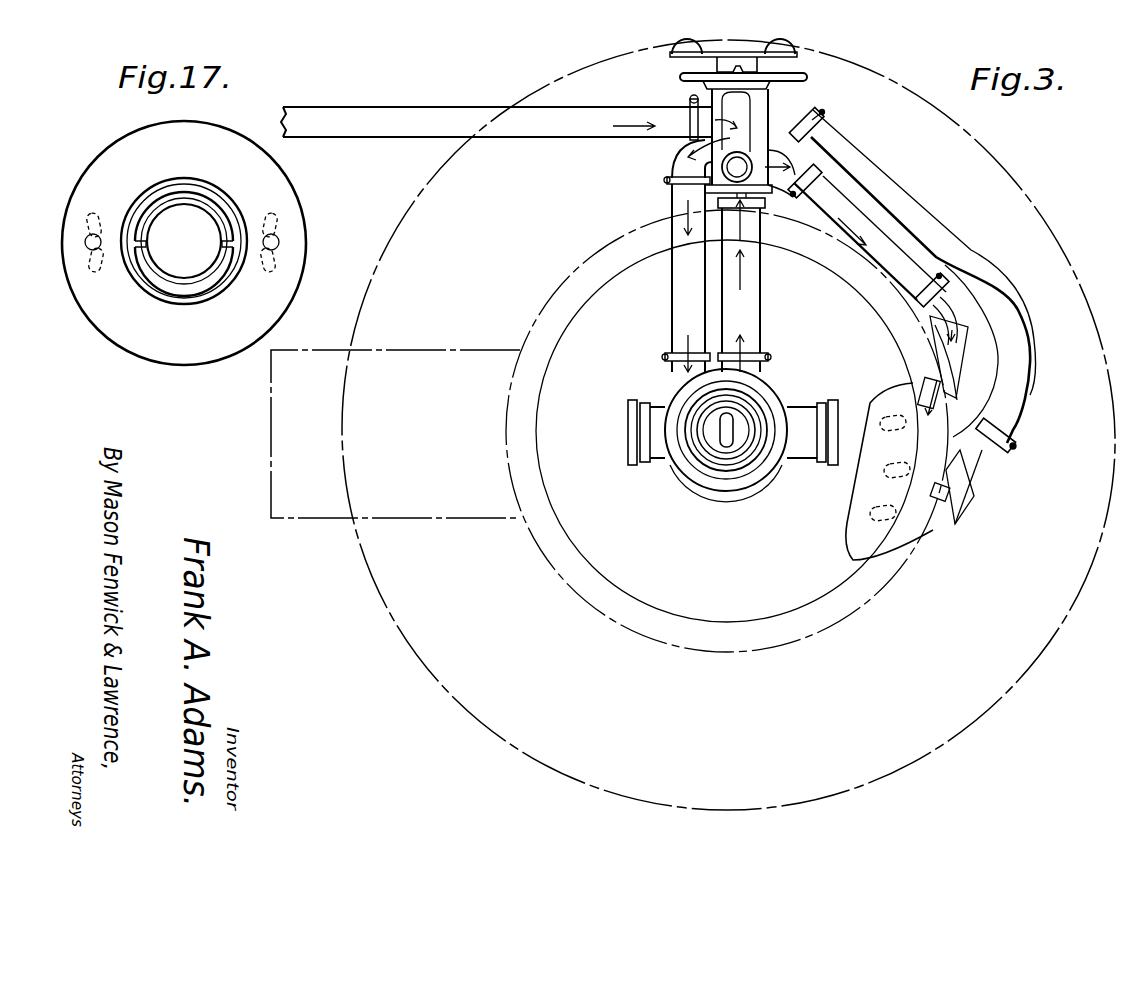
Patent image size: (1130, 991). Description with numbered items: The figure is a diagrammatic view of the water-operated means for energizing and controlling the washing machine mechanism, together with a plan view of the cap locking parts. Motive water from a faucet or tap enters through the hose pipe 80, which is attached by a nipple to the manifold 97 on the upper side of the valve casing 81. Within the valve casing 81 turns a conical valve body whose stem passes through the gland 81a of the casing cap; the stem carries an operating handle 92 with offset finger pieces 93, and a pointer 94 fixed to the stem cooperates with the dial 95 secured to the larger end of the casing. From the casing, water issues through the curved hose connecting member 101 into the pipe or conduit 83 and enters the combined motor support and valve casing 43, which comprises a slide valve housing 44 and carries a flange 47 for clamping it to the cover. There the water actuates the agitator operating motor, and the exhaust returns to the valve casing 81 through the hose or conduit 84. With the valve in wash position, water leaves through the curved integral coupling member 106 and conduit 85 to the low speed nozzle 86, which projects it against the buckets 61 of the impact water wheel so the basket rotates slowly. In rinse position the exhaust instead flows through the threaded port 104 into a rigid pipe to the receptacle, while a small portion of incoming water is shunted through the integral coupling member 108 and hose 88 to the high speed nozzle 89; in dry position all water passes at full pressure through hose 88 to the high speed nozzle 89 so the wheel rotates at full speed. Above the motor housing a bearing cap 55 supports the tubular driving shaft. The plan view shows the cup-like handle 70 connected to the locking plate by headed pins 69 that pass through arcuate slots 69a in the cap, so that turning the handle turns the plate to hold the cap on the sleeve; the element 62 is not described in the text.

In FIG. 3, the combined motor support and valve casing 43 is at (681, 480).
In FIG. 3, the slide valve housing 44 is at (662, 410).
In FIG. 3, the flange 47 is at (767, 393).
In FIG. 17, the bearing cap 55 is at (188, 278).
In FIG. 3, the buckets 61 is at (898, 533).
In FIG. 17, the split collar 62 is at (217, 240).
In FIG. 17, the headed pins 69 is at (92, 250).
In FIG. 17, the arcuate slots 69a is at (117, 200).
In FIG. 17, the cup-like handle 70 is at (232, 348).
In FIG. 3, the hose pipe 80 is at (390, 117).
In FIG. 3, the valve casing 81 is at (760, 103).
In FIG. 3, the gland 81a is at (765, 117).
In FIG. 3, the pipe or conduit 83 is at (675, 283).
In FIG. 3, the hose or conduit 84 is at (750, 302).
In FIG. 3, the conduit 85 is at (886, 252).
In FIG. 3, the low speed nozzle 86 is at (935, 362).
In FIG. 3, the hose or conduit 88 is at (925, 225).
In FIG. 3, the high speed nozzle 89 is at (941, 489).
In FIG. 3, the operating handle 92 is at (760, 65).
In FIG. 3, the offset finger pieces 93 is at (680, 50).
In FIG. 3, the pointer 94 is at (718, 62).
In FIG. 3, the dial 95 is at (683, 78).
In FIG. 3, the manifold 97 is at (742, 167).
In FIG. 3, the curved hose connecting member 101 is at (677, 153).
In FIG. 3, the port 104 is at (777, 207).
In FIG. 3, the curved integral coupling member 106 is at (767, 152).
In FIG. 3, the integral coupling member 108 is at (826, 114).